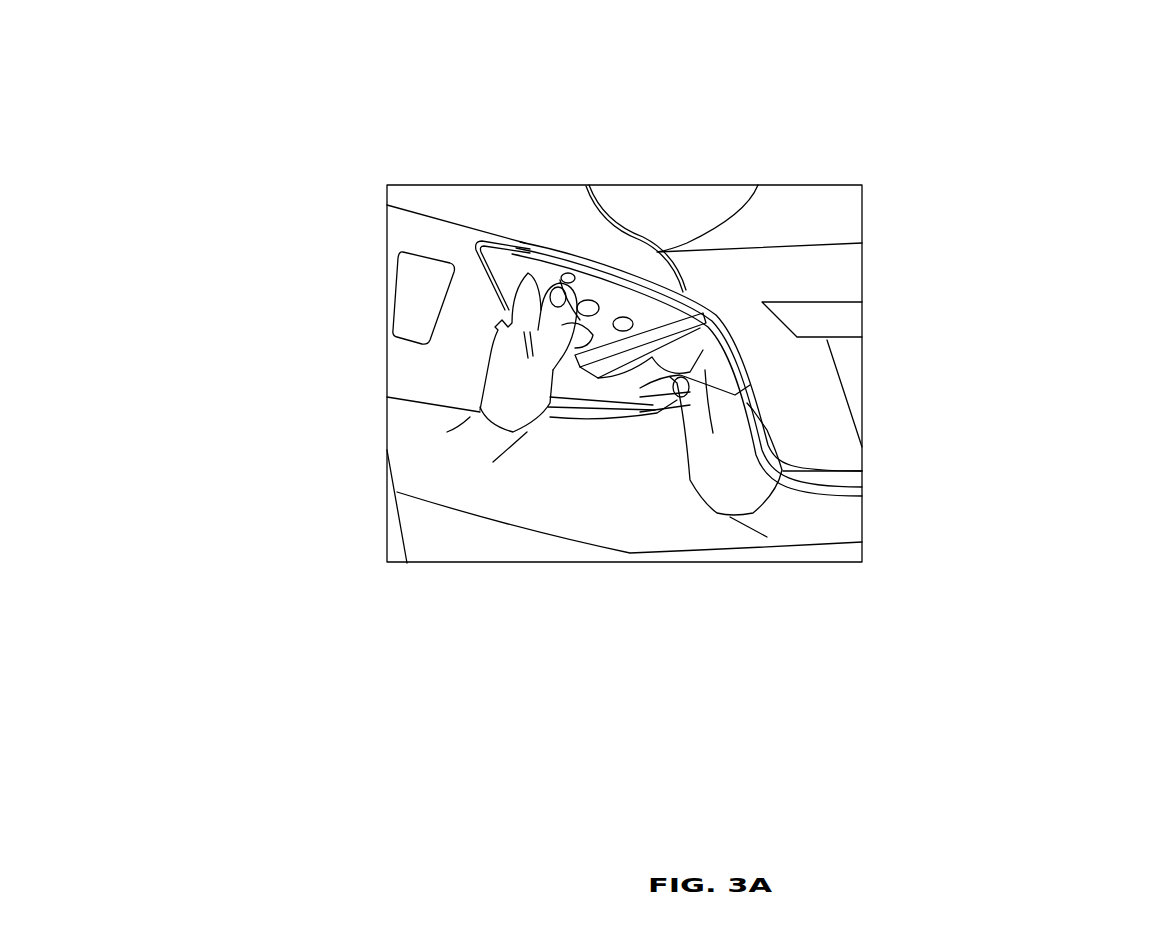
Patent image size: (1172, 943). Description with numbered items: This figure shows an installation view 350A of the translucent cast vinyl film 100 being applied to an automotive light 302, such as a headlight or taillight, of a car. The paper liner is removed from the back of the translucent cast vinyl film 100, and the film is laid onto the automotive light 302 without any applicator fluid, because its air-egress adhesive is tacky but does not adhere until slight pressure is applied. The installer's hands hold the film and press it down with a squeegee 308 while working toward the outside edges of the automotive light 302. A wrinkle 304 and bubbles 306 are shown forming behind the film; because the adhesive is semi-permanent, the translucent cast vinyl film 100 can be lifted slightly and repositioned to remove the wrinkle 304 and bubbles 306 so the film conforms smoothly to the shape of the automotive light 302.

The translucent cast vinyl film 100 is at (543, 250).
The automotive light 302 is at (503, 272).
The wrinkle 304 is at (578, 260).
The bubbles 306 is at (622, 302).
The squeegee 308 is at (657, 365).
The installation view 350A is at (1016, 712).